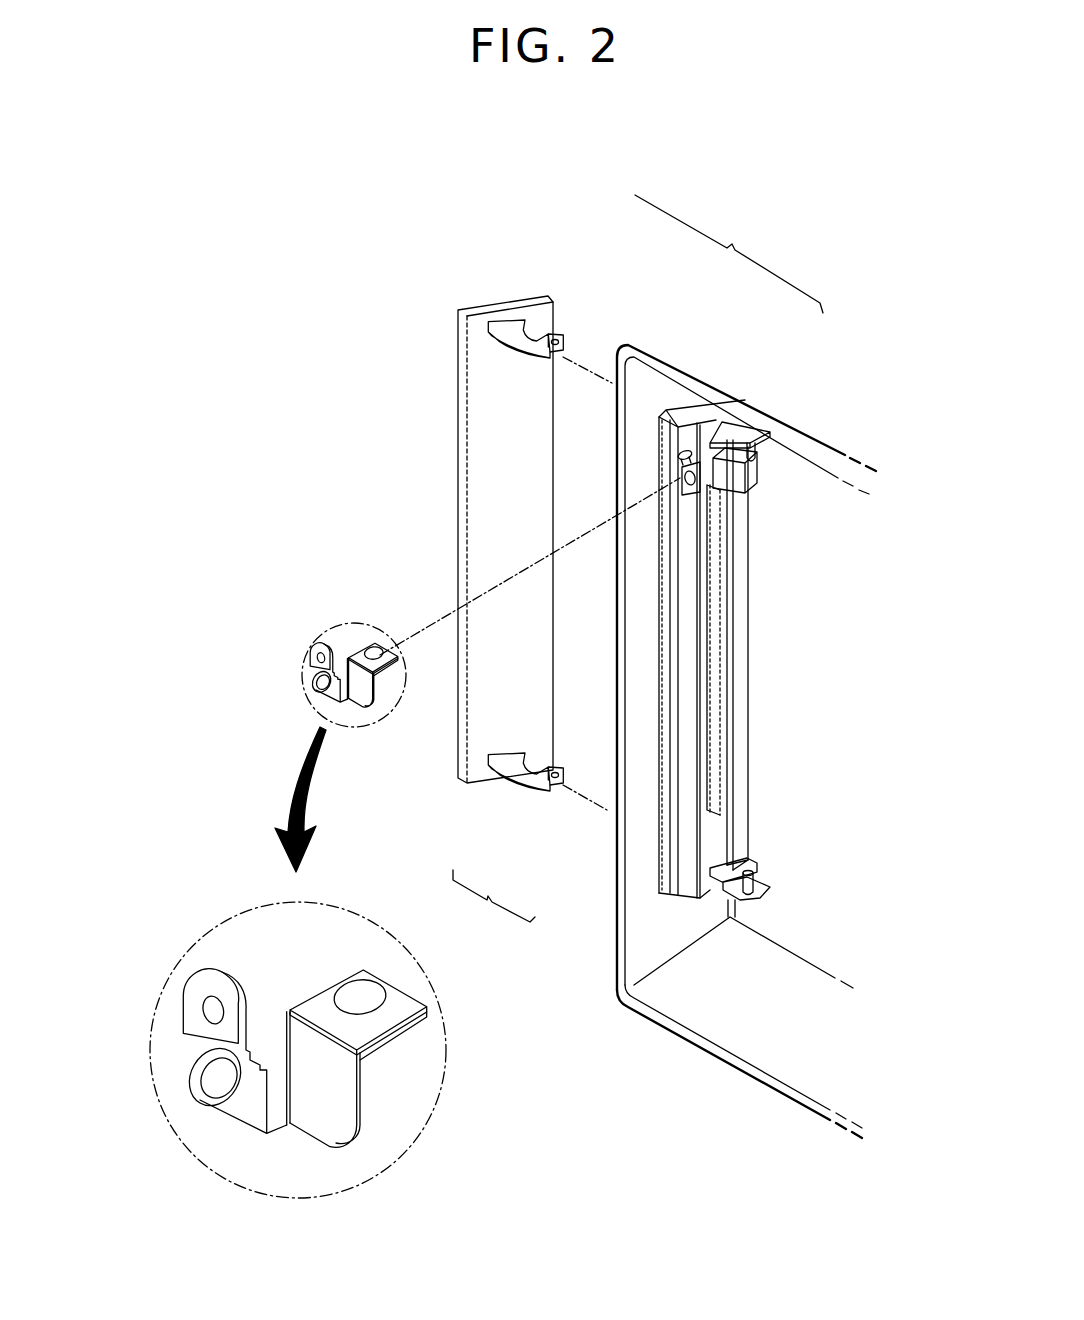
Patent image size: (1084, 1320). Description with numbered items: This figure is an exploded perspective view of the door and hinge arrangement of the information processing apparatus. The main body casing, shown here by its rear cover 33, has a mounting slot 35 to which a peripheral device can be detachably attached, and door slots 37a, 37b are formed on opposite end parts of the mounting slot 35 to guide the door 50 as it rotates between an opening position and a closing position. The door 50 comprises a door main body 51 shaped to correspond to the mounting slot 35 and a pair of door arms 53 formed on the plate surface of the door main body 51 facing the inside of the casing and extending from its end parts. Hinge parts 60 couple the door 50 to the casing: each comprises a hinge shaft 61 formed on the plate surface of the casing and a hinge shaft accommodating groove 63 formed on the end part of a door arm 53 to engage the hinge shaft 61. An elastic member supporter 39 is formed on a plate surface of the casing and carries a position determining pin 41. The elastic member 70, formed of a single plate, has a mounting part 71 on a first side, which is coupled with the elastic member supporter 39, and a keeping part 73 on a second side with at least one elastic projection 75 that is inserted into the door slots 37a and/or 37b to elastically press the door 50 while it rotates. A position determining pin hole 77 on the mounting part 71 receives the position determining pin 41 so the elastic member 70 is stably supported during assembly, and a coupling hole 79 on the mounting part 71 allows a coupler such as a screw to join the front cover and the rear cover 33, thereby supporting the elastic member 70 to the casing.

The rear cover 33 is at (807, 412).
The mounting slot 35 is at (718, 688).
The door slot 37a is at (717, 422).
The door slot 37b is at (763, 858).
The elastic member supporter 39 is at (688, 484).
The position determining pin 41 is at (681, 455).
The door 50 is at (368, 332).
The door main body 51 is at (465, 464).
The door arms 53 is at (488, 325).
The hinge parts 60 is at (722, 241).
The hinge shaft 61 is at (750, 447).
The hinge shaft accommodating groove 63 is at (552, 327).
The elastic member 70 is at (283, 1024).
The mounting part 71 is at (184, 1097).
The keeping part 73 is at (391, 1005).
The elastic projection 75 is at (360, 978).
The position determining pin hole 77 is at (210, 1007).
The coupling hole 79 is at (220, 1095).